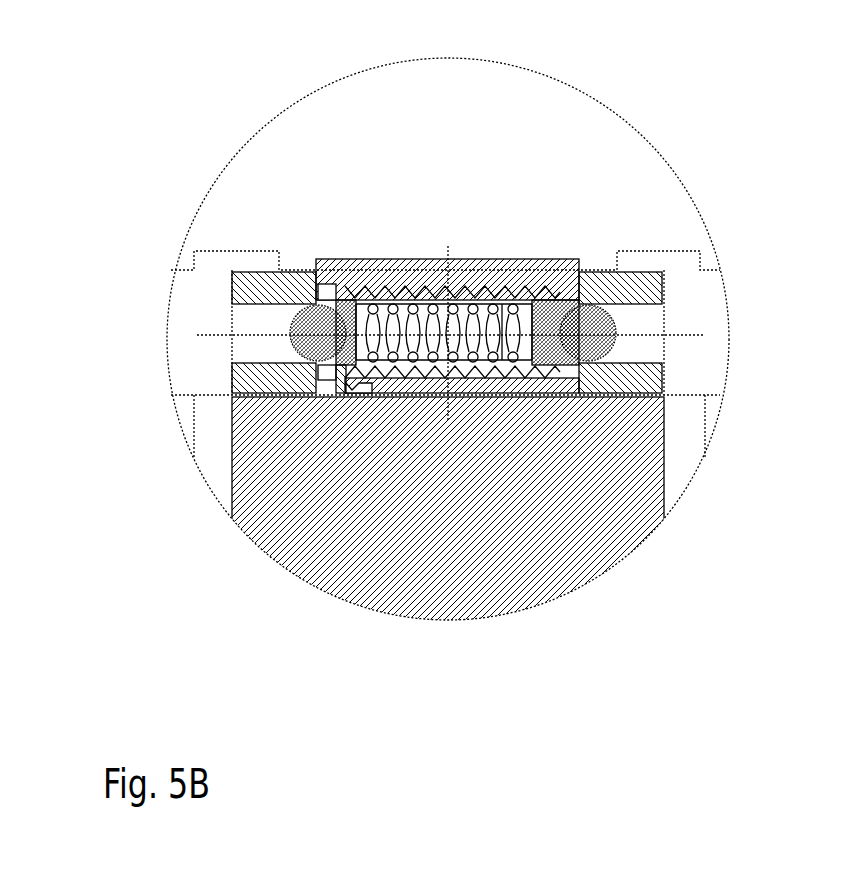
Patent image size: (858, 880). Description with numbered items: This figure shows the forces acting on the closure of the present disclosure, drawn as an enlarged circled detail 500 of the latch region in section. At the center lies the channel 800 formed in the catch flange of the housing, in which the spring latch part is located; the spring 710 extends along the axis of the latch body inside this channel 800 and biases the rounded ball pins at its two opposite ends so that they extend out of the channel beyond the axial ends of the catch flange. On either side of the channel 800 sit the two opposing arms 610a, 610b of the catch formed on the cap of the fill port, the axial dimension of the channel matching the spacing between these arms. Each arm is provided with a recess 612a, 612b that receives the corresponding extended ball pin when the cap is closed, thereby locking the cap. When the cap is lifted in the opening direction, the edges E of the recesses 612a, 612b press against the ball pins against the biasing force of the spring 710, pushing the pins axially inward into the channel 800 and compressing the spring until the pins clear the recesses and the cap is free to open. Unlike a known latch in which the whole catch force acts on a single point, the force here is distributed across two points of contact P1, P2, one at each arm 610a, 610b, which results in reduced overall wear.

The sealing assembly 500 is at (243, 104).
The first arm of the catch 610a is at (262, 293).
The second arm of the catch 610b is at (633, 285).
The first recess 612a is at (257, 353).
The second recess 612b is at (630, 350).
The spring 710 is at (469, 310).
The channel 800 is at (362, 393).
The edges of the recesses E is at (314, 385).
The first point of contact P1 is at (317, 396).
The second point of contact P2 is at (578, 396).